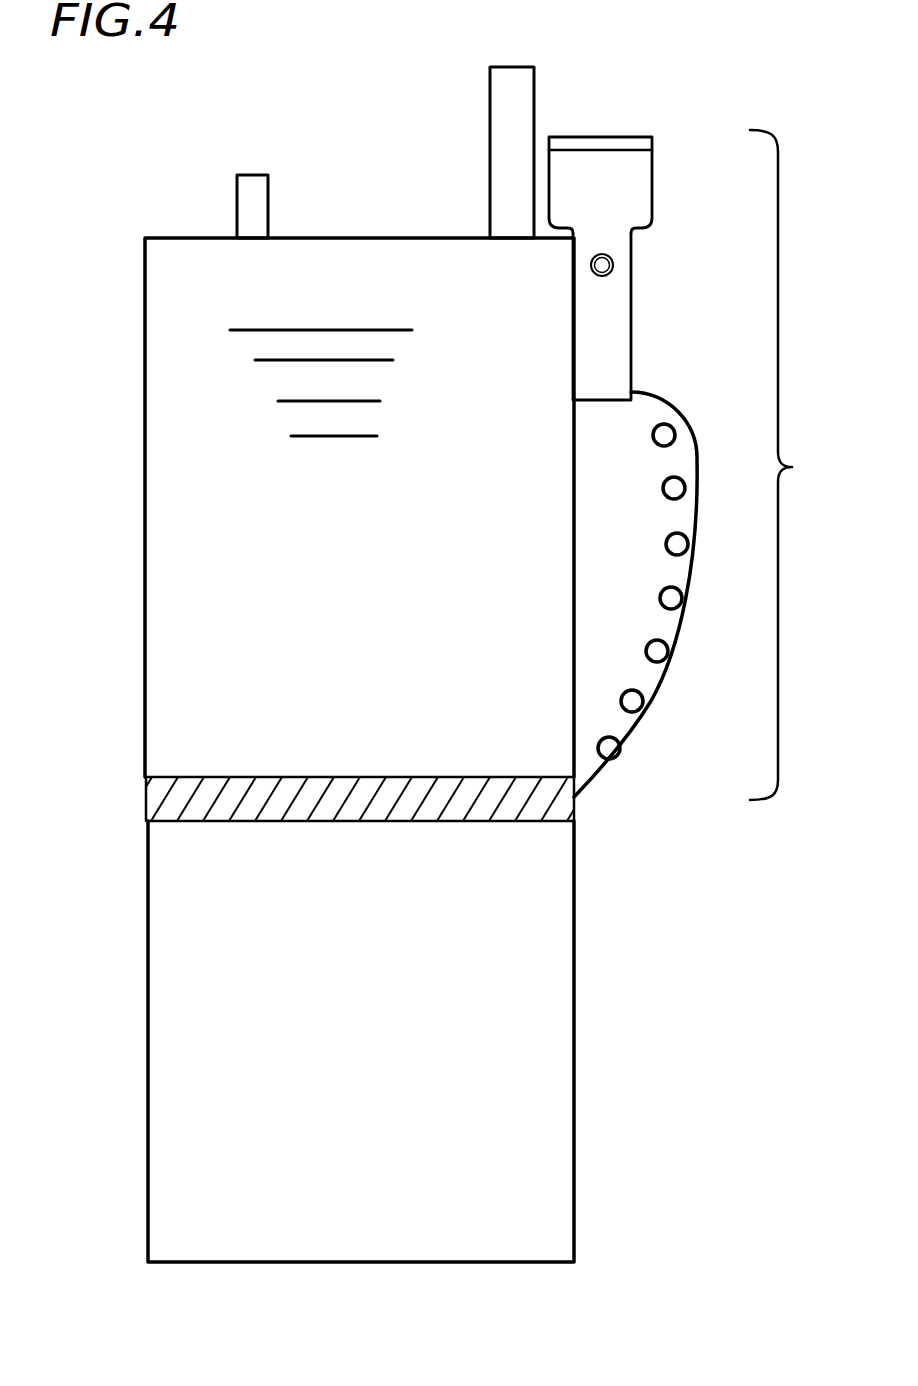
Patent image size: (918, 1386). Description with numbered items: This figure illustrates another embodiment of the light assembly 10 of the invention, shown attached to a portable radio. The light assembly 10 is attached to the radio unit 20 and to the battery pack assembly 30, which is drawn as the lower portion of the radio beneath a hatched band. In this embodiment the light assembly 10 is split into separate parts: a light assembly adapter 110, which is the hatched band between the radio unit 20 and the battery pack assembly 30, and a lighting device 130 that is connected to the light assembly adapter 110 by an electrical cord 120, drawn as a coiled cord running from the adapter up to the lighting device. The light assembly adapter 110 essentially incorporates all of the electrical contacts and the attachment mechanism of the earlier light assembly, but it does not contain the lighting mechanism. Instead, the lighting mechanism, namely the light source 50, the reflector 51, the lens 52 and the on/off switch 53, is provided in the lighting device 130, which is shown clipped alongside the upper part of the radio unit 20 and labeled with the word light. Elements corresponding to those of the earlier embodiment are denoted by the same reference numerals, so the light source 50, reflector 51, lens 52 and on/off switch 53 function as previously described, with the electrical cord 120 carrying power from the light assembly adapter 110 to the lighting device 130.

The light assembly 10 is at (478, 652).
The radio unit 20 is at (368, 246).
The battery pack assembly 30 is at (552, 1070).
The light source 50 is at (636, 134).
The reflector 51 is at (590, 134).
The lens 52 is at (607, 130).
The on/off switch 53 is at (613, 266).
The light assembly adapter 110 is at (574, 803).
The electrical cord 120 is at (686, 614).
The lighting device 130 is at (632, 345).